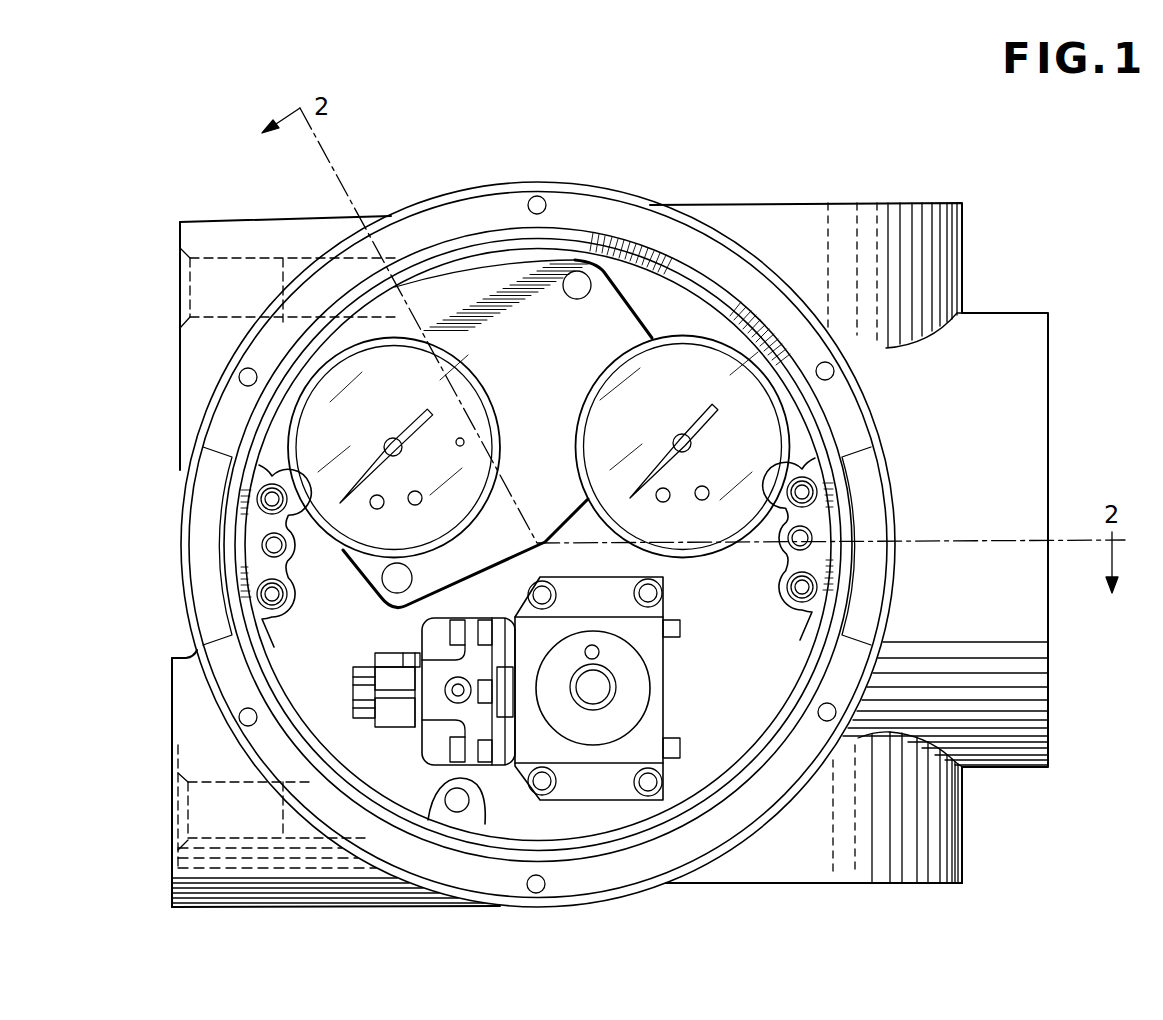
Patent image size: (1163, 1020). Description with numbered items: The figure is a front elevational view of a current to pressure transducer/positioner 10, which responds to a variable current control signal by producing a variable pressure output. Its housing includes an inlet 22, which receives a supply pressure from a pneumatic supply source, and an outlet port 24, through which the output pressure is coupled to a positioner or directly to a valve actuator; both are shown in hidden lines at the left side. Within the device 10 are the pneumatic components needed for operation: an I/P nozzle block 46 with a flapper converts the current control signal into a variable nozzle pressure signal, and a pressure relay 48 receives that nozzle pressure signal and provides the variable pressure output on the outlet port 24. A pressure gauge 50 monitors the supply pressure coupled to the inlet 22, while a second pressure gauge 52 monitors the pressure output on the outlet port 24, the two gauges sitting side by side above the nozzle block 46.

The current to pressure transducer/positioner 10 is at (762, 162).
The inlet 22 is at (178, 791).
The outlet port 24 is at (180, 283).
The I/P nozzle block 46 is at (655, 721).
The pressure relay 48 is at (462, 292).
The pressure gauge 50 is at (325, 386).
The second pressure gauge 52 is at (723, 363).